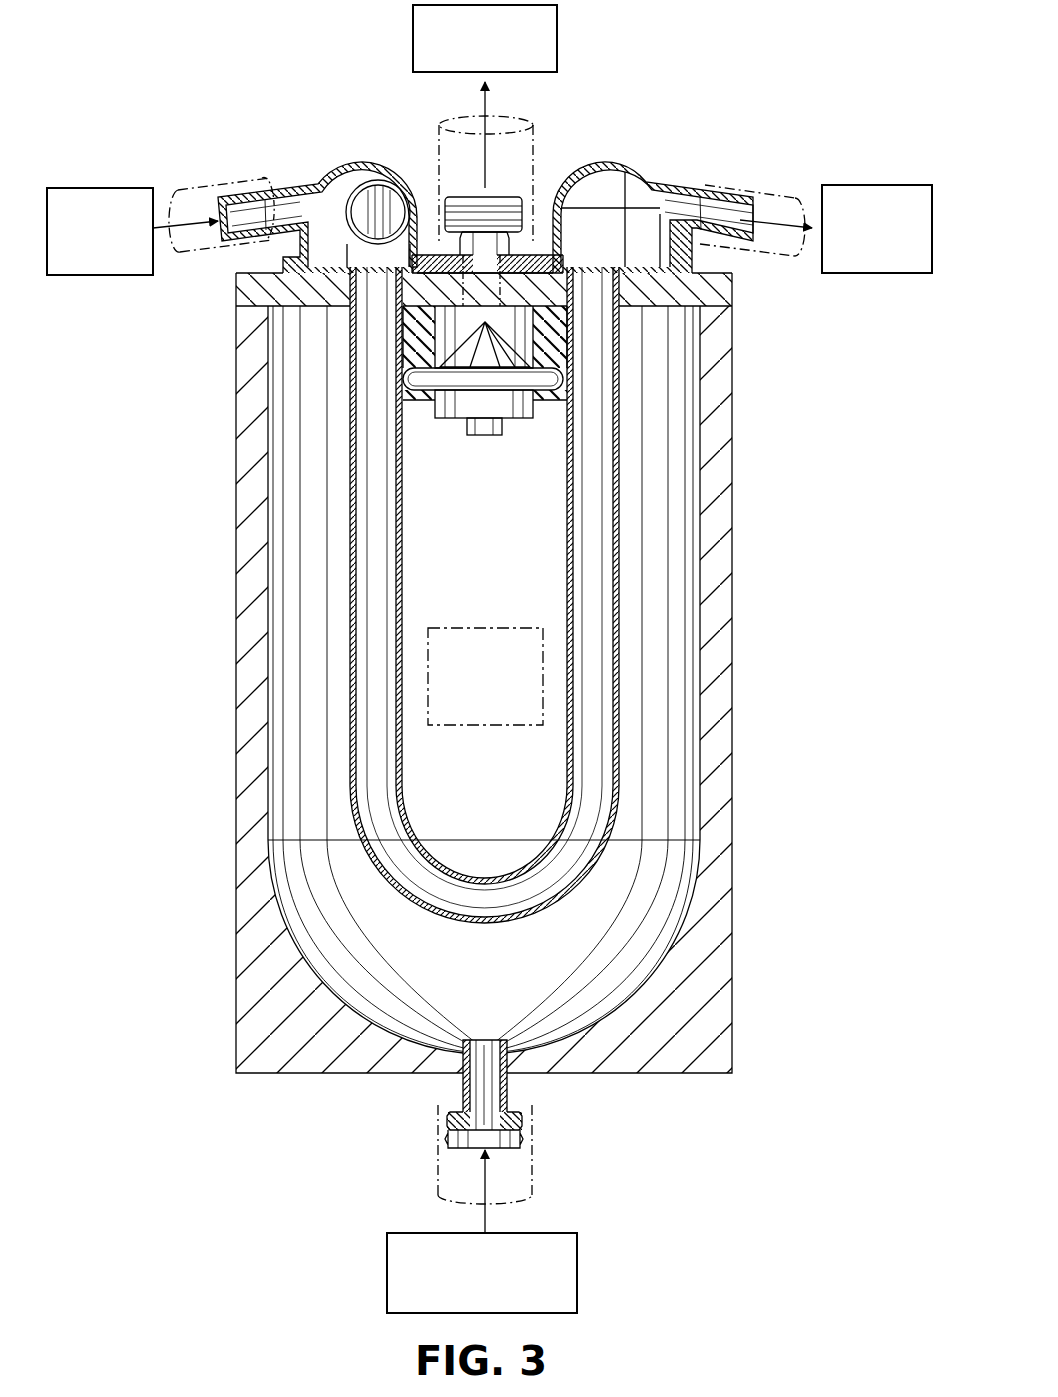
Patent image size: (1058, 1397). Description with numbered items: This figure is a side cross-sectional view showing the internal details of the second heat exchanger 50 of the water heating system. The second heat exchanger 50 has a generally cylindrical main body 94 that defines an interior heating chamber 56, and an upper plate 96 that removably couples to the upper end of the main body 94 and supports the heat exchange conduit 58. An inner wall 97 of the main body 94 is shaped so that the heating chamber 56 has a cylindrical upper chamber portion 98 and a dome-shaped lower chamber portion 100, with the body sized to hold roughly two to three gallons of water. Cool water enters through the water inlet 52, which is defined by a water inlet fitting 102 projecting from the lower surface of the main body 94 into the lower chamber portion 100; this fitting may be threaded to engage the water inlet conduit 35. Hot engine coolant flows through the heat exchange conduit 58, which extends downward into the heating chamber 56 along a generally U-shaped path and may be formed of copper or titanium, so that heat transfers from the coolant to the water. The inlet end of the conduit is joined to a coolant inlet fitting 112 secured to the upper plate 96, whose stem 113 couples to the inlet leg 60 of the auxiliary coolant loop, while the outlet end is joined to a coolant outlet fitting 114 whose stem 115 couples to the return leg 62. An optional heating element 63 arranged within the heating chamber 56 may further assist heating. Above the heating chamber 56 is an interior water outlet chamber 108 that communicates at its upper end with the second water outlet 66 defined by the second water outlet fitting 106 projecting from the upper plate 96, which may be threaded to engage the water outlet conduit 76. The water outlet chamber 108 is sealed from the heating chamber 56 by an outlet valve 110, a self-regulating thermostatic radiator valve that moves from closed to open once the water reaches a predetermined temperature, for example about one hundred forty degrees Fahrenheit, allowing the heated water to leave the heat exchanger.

The second heat exchanger 50 is at (218, 48).
The water inlet conduit 35 is at (533, 1165).
The water inlet 52 is at (463, 1143).
The heating chamber 56 is at (300, 487).
The heat exchange conduit 58 is at (563, 520).
The inlet leg 60 is at (190, 186).
The return leg 62 is at (785, 180).
The heating element 63 is at (468, 727).
The second water outlet 66 is at (495, 195).
The water outlet conduit 76 is at (456, 122).
The main body 94 is at (236, 655).
The upper plate 96 is at (236, 290).
The inner wall 97 is at (685, 660).
The upper chamber portion 98 is at (485, 575).
The lower chamber portion 100 is at (485, 983).
The water inlet fitting 102 is at (437, 1122).
The second water outlet fitting 106 is at (462, 197).
The water outlet chamber 108 is at (520, 333).
The outlet valve 110 is at (450, 420).
The coolant inlet fitting 112 is at (336, 162).
The stem 113 is at (233, 193).
The coolant outlet fitting 114 is at (648, 164).
The stem 115 is at (728, 190).